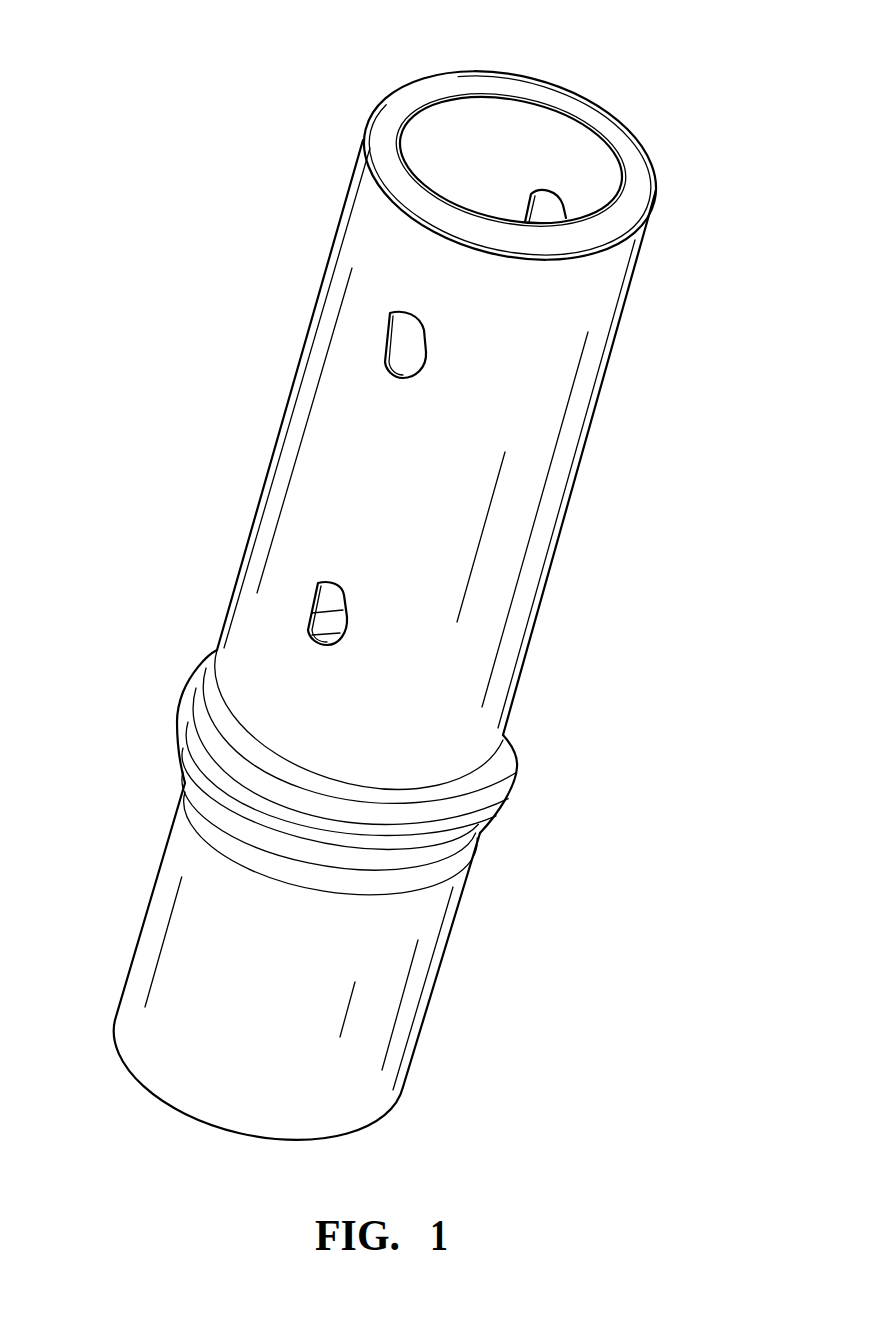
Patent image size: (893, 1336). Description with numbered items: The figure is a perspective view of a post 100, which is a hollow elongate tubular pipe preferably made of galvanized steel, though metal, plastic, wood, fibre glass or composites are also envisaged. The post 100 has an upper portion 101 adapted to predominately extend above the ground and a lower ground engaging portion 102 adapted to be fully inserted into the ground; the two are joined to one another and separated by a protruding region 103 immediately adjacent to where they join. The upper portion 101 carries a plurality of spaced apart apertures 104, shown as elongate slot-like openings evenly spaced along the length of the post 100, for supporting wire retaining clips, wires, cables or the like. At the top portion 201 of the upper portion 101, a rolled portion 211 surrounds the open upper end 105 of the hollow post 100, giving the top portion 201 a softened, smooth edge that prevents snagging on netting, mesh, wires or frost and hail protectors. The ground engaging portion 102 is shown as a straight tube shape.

The post 100 is at (181, 203).
The upper portion 101 is at (520, 535).
The lower ground engaging portion 102 is at (413, 999).
The protruding region 103 is at (180, 712).
The apertures 104 is at (312, 605).
The open upper end 105 is at (530, 154).
The top portion 201 is at (608, 258).
The rolled portion 211 is at (392, 112).